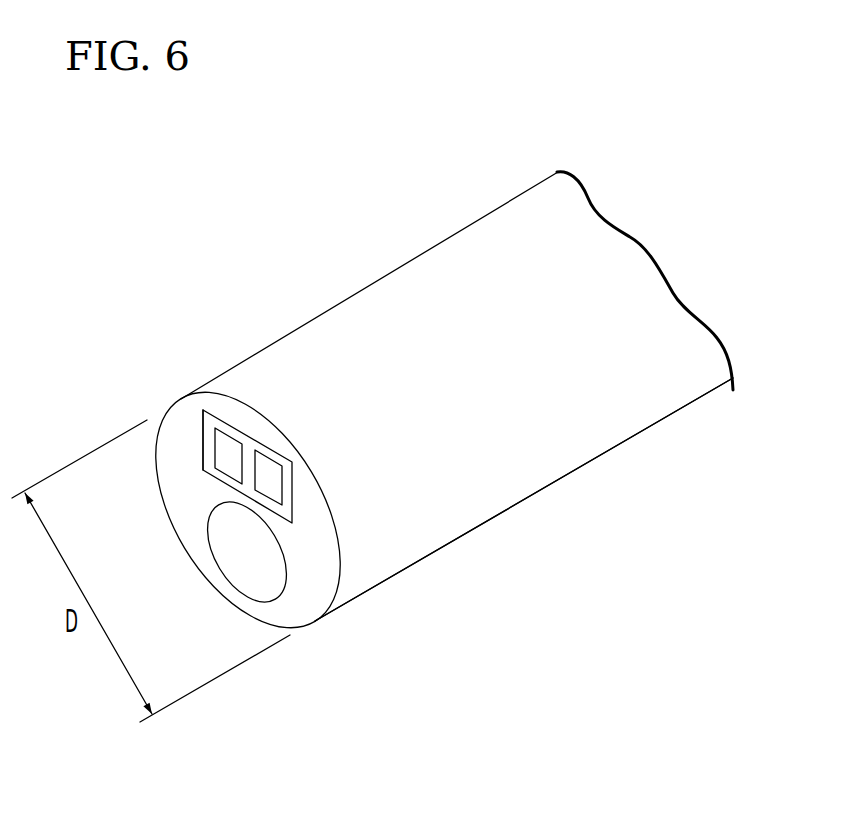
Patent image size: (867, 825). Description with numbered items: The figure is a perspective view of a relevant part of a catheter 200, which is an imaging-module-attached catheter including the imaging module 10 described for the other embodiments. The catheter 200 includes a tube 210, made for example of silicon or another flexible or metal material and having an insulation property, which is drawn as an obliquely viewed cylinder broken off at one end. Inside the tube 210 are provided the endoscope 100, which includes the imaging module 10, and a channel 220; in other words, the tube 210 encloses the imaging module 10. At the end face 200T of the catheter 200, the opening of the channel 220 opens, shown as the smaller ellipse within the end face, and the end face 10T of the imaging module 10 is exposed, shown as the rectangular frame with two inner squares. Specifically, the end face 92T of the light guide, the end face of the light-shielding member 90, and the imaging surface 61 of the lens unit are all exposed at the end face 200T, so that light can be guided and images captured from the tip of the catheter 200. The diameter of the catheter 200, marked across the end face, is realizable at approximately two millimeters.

The imaging module 10 is at (305, 196).
The end face of the imaging module 10T is at (205, 458).
The end face of the light guide 92T is at (228, 447).
The imaging surface 61 is at (258, 475).
The light-shielding member 90 is at (272, 452).
The endoscope 100 is at (340, 254).
The catheter 200 is at (592, 468).
The tube 210 is at (445, 498).
The channel 220 is at (250, 568).
The end face of the catheter 200T is at (310, 562).